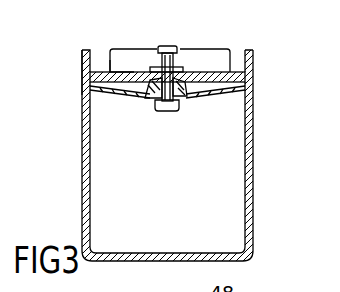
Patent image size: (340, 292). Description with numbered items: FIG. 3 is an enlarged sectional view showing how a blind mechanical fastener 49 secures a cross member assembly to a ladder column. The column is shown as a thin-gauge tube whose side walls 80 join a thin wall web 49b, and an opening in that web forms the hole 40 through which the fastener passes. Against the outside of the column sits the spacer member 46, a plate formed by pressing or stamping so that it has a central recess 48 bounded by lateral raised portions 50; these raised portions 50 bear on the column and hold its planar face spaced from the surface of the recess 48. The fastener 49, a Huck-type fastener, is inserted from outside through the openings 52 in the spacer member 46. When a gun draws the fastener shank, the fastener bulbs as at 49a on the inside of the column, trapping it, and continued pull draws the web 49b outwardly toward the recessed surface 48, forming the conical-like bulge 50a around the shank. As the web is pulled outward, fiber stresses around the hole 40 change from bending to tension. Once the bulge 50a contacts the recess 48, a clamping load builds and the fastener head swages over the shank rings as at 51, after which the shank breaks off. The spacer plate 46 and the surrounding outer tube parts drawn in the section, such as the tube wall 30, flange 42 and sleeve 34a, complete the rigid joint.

The container 30 is at (168, 155).
The lid assembly 34a is at (110, 40).
The hole 40 is at (167, 123).
The lid 42 is at (170, 55).
The spacer member 46 is at (118, 66).
The central recess 48 is at (214, 72).
The blind mechanical fastener 49 is at (193, 57).
The bulb of blind fastener 49a is at (173, 110).
The web of column wall 49b is at (118, 97).
The raised portions 50 is at (80, 87).
The bulge of column wall 50a is at (134, 70).
The swaged fastener head 51 is at (160, 46).
The openings 52 is at (188, 72).
The side walls of column 80 is at (80, 194).